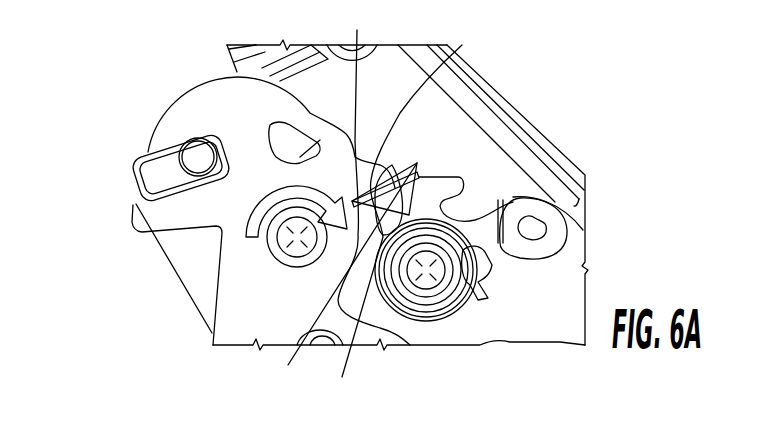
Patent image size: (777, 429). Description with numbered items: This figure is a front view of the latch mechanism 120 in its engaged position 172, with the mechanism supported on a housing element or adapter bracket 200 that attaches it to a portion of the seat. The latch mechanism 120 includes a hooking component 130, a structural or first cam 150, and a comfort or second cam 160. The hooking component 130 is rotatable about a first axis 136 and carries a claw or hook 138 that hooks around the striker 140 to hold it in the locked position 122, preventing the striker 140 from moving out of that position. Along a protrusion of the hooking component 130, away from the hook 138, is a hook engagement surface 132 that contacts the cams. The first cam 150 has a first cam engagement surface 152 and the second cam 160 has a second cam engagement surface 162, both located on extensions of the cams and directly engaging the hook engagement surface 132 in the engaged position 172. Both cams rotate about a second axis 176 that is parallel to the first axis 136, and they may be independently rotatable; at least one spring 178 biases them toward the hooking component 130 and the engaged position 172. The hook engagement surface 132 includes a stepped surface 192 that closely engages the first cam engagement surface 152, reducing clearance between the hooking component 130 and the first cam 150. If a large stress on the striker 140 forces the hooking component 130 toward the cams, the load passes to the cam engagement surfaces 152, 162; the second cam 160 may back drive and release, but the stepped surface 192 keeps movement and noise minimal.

The latch mechanism 120 is at (626, 224).
The locked position 122 is at (140, 265).
The hooking component 130 is at (262, 348).
The hook engagement surface 132 is at (450, 47).
The first axis 136 is at (283, 245).
The hook 138 is at (202, 125).
The striker 140 is at (128, 191).
The first cam 150 is at (421, 182).
The first cam engagement surface 152 is at (346, 282).
The second cam 160 is at (407, 207).
The second cam engagement surface 162 is at (395, 231).
The engaged position 172 is at (182, 351).
The second axis 176 is at (426, 272).
The spring 178 is at (431, 310).
The stepped surface 192 is at (374, 174).
The adapter bracket 200 is at (495, 87).